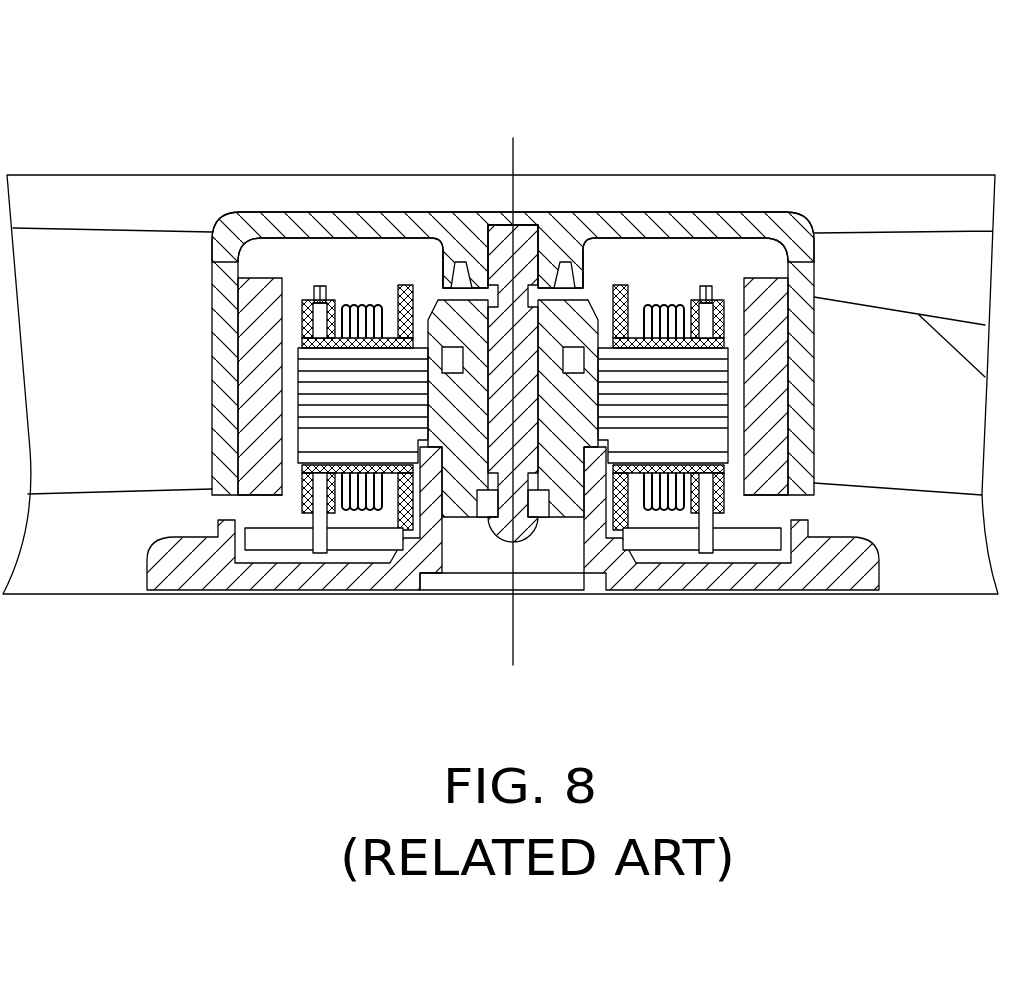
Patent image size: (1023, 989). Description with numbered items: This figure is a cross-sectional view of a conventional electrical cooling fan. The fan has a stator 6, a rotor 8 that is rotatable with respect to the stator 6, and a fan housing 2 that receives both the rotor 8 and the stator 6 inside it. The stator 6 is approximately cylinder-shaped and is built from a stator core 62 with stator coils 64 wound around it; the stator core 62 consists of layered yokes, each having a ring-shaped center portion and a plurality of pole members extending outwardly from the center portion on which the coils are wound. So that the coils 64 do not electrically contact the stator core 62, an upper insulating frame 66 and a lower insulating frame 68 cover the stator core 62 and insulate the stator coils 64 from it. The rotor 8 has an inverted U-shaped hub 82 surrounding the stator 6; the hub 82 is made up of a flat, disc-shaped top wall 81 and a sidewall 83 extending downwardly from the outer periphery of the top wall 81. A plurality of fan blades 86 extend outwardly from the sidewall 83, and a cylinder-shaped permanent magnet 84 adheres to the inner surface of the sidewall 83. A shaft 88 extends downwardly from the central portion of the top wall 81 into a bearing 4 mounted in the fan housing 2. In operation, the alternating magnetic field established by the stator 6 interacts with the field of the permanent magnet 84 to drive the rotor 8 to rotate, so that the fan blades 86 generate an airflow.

The fan housing 2 is at (47, 597).
The bearing 4 is at (572, 487).
The stator 6 is at (175, 112).
The stator core 62 is at (327, 370).
The stator coils 64 is at (360, 303).
The upper insulating frame 66 is at (413, 313).
The lower insulating frame 68 is at (303, 482).
The rotor 8 is at (603, 74).
The top wall 81 is at (738, 248).
The hub 82 is at (541, 282).
The sidewall 83 is at (800, 322).
The permanent magnet 84 is at (765, 325).
The fan blades 86 is at (948, 275).
The shaft 88 is at (540, 238).